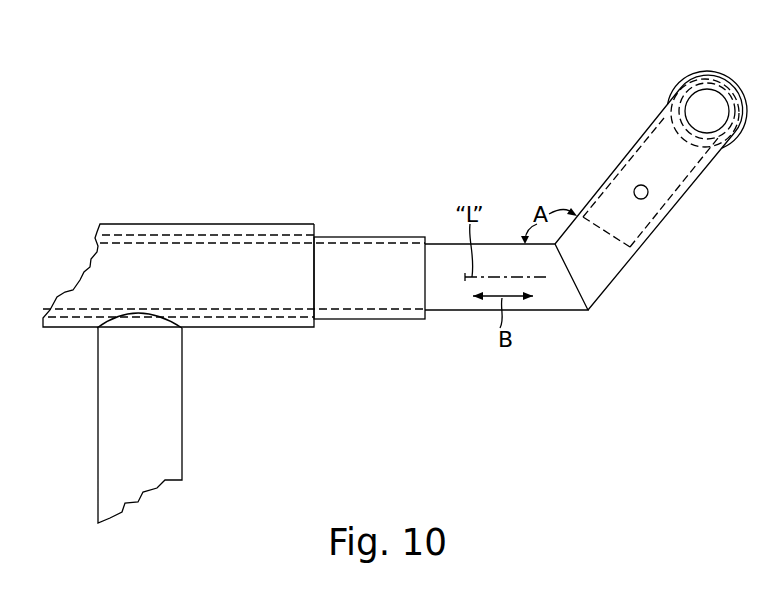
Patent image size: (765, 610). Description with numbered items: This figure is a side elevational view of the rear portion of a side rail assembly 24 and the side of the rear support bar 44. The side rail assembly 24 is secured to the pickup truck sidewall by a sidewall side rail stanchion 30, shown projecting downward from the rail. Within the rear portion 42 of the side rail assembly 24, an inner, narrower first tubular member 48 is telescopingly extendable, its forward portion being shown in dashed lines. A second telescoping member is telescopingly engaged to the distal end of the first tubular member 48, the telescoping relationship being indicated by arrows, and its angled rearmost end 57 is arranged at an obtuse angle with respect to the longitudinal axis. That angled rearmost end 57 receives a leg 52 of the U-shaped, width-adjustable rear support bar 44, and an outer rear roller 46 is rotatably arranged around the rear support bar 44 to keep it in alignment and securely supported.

The side rail assembly 24 is at (242, 225).
The rear portion 42 is at (266, 329).
The first tubular member 48 is at (367, 320).
The sidewall side rail stanchion 30 is at (172, 373).
The angled rearmost end 57 is at (607, 272).
The leg portion 52 is at (624, 166).
The outer rear roller 46 is at (692, 72).
The rear support bar 44 is at (684, 104).